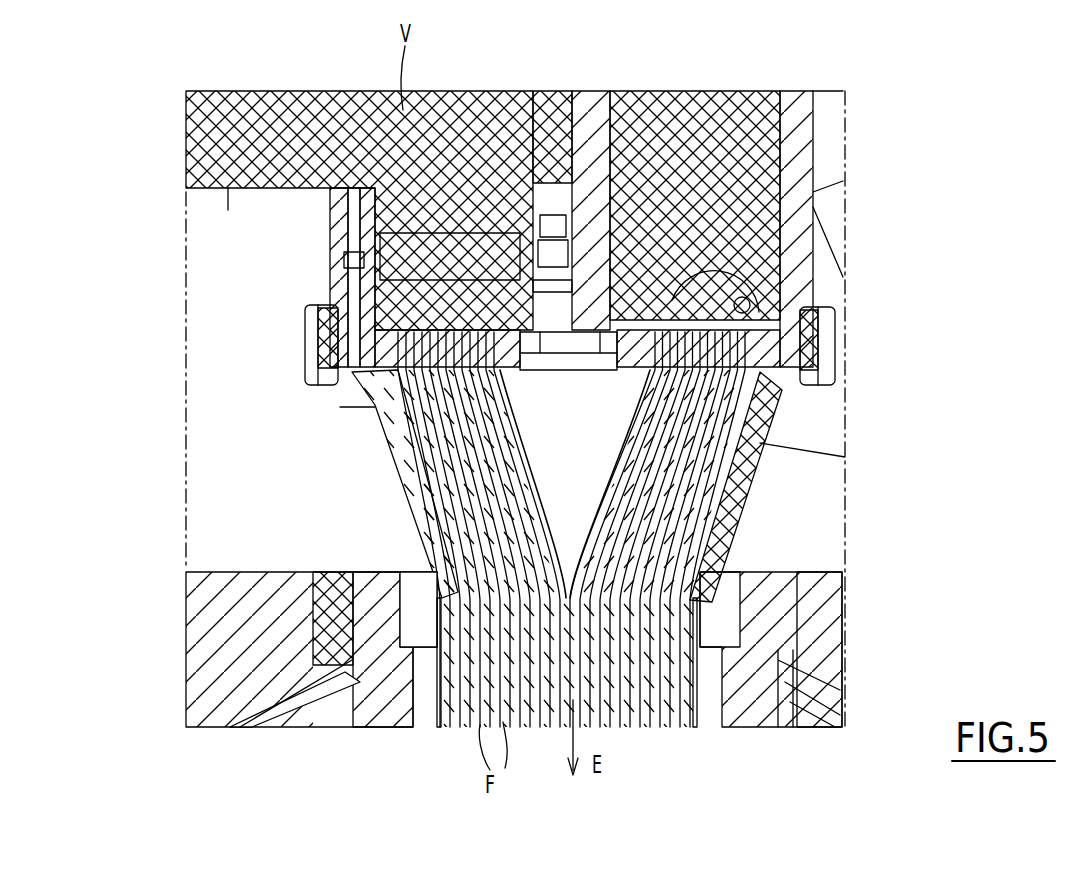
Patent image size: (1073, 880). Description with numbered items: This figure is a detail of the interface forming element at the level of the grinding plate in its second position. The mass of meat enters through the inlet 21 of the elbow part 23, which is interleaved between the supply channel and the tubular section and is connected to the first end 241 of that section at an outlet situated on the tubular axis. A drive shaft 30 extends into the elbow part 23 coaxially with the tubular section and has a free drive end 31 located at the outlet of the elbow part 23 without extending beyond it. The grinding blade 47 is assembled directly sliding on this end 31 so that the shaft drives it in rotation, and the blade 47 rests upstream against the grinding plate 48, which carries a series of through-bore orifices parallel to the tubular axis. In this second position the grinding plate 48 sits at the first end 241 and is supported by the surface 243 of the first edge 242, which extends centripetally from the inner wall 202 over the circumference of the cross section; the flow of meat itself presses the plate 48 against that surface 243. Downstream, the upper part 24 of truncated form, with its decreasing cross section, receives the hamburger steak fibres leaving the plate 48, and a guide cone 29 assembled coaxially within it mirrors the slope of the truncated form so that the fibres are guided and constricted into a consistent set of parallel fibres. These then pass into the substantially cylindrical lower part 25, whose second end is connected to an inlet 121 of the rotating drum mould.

The inlet 21 is at (228, 206).
The elbow part 23 is at (798, 152).
The upper part of truncated form 24 is at (381, 442).
The lower part 25 is at (437, 690).
The guide cone 29 is at (579, 464).
The drive shaft 30 is at (592, 110).
The free drive end 31 is at (567, 312).
The grinding blade 47 is at (700, 253).
The grinding plate 48 is at (748, 303).
The inlet of the mould 121 is at (775, 683).
The inner wall 202 is at (718, 453).
The first end 241 is at (305, 325).
The first edge 242 is at (803, 387).
The surface of the first edge 243 is at (305, 335).